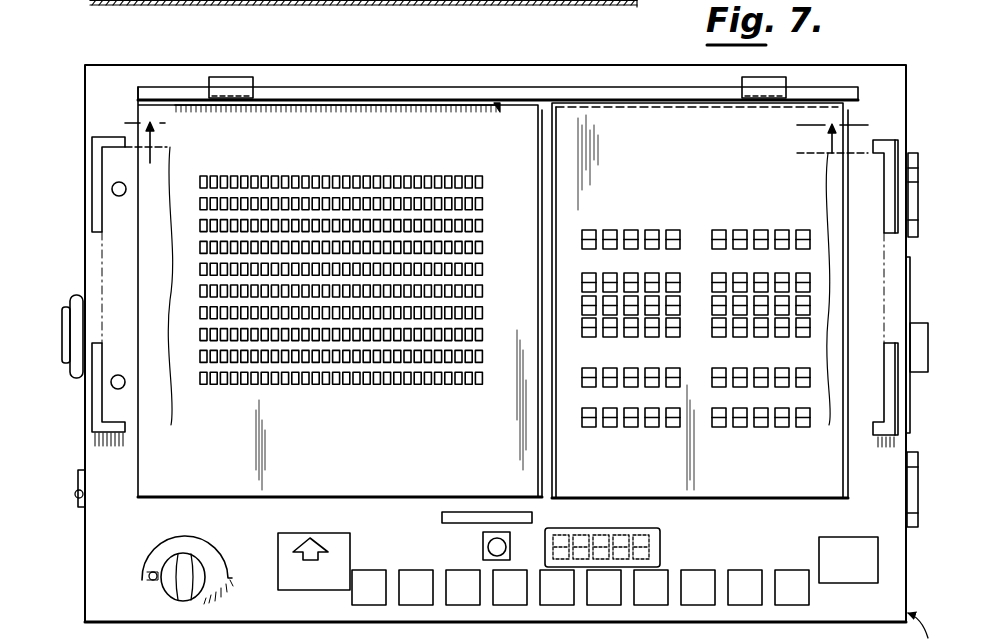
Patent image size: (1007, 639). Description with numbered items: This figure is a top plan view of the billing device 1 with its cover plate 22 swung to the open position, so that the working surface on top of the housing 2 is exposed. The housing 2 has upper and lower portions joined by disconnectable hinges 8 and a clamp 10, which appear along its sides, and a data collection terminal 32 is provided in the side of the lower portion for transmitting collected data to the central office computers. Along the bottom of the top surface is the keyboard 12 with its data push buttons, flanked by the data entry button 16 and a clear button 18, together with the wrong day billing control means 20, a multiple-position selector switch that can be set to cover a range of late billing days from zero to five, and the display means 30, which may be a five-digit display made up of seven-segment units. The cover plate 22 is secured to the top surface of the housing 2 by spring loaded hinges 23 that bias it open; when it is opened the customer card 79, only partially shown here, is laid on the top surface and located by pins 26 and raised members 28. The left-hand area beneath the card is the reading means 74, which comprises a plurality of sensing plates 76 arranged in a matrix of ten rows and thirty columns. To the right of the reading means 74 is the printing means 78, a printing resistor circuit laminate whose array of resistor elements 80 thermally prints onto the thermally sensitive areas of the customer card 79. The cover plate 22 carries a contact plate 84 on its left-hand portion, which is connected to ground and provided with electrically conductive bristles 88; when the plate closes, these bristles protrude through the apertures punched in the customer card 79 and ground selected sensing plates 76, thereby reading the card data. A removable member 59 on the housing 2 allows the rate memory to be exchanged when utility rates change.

The billing device 1 is at (549, 62).
The housing 2 is at (84, 84).
The disconnectable hinges 8 is at (918, 182).
The clamp 10 is at (66, 318).
The keyboard 12 is at (690, 567).
The data entry button 16 is at (280, 549).
The clear key 18 is at (820, 549).
The wrong day billing control means 20 is at (173, 572).
The cover plate 22 is at (418, 90).
The spring loaded hinges 23 is at (228, 80).
The pins 26 is at (119, 197).
The raised members 28 is at (98, 182).
The display means 30 is at (622, 528).
The data collection terminal 32 is at (922, 330).
The member 59 is at (80, 472).
The reading means 74 is at (401, 171).
The sensing plates 76 is at (270, 177).
The printing means 78 is at (654, 228).
The customer card 79 is at (158, 425).
The resistor elements 80 is at (760, 230).
The contact plate 84 is at (345, 114).
The electrically conductive bristles 88 is at (458, 112).